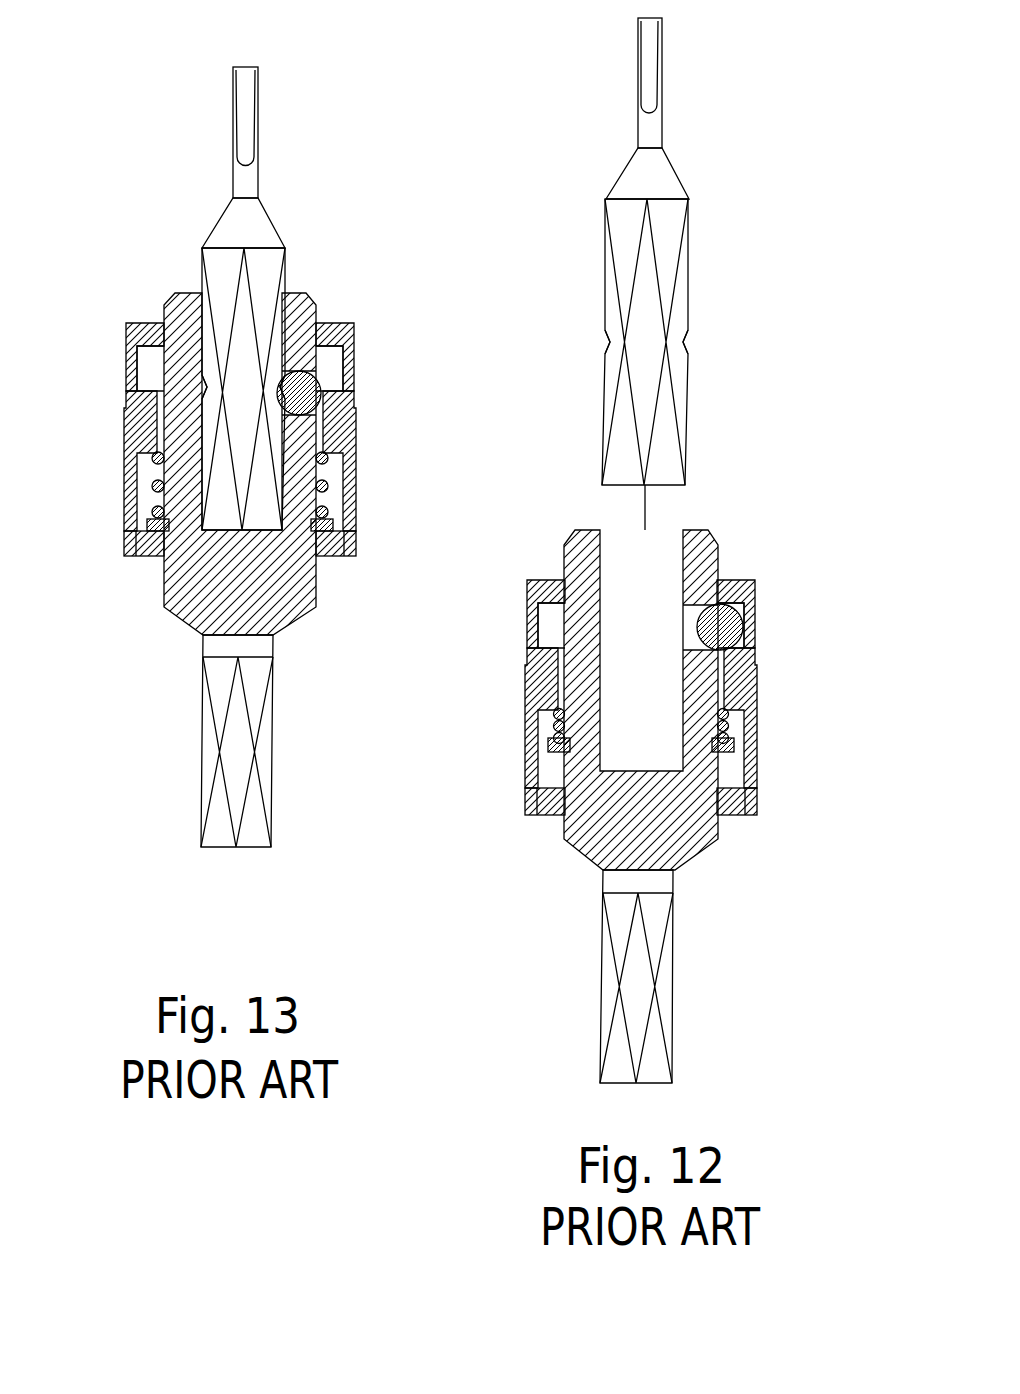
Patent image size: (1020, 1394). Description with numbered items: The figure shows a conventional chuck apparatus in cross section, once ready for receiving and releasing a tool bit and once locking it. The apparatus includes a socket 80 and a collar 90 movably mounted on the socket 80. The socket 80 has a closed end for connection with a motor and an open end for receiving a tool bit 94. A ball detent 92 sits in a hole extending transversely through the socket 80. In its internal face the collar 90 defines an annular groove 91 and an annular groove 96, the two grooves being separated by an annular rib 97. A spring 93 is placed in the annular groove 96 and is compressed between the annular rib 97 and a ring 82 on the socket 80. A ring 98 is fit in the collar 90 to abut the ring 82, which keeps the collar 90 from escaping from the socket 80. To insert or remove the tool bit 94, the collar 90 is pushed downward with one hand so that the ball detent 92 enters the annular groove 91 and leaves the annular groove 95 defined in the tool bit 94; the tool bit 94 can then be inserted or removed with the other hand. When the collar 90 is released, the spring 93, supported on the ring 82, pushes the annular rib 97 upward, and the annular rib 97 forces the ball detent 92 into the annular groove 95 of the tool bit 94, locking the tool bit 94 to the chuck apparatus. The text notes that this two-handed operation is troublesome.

In FIG. 13, the socket 80 is at (178, 585).
In FIG. 12, the socket 80 is at (585, 826).
In FIG. 13, the ring 82 is at (155, 527).
In FIG. 12, the ring 82 is at (555, 750).
In FIG. 13, the collar 90 is at (125, 324).
In FIG. 12, the collar 90 is at (545, 590).
In FIG. 13, the annular groove 91 is at (332, 358).
In FIG. 12, the annular groove 91 is at (552, 630).
In FIG. 13, the ball detent 92 is at (300, 390).
In FIG. 12, the ball detent 92 is at (725, 622).
In FIG. 13, the spring 93 is at (318, 453).
In FIG. 12, the spring 93 is at (723, 713).
In FIG. 13, the tool bit 94 is at (298, 232).
In FIG. 12, the tool bit 94 is at (702, 183).
In FIG. 13, the annular groove 95 is at (200, 388).
In FIG. 12, the annular groove 95 is at (690, 342).
In FIG. 13, the annular rib 97 is at (143, 426).
In FIG. 12, the annular rib 97 is at (550, 680).
In FIG. 13, the annular groove 96 is at (330, 502).
In FIG. 12, the annular groove 96 is at (732, 771).
In FIG. 13, the ring 98 is at (150, 545).
In FIG. 12, the ring 98 is at (548, 800).